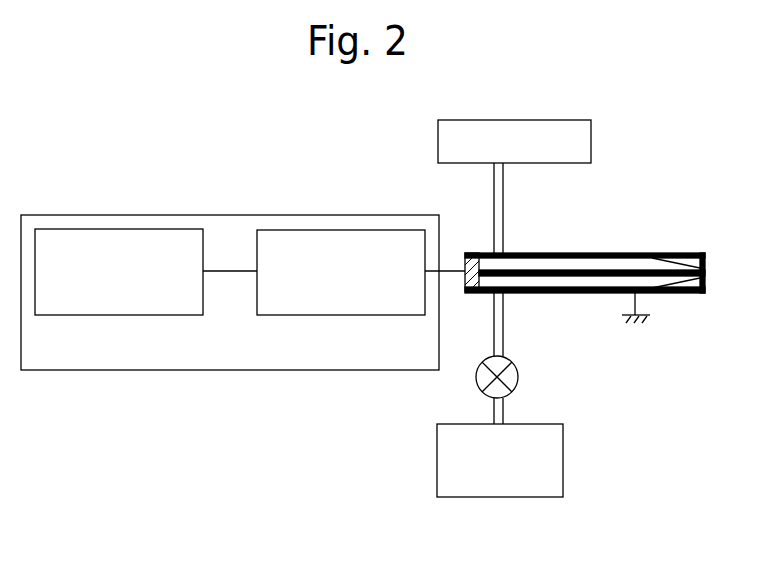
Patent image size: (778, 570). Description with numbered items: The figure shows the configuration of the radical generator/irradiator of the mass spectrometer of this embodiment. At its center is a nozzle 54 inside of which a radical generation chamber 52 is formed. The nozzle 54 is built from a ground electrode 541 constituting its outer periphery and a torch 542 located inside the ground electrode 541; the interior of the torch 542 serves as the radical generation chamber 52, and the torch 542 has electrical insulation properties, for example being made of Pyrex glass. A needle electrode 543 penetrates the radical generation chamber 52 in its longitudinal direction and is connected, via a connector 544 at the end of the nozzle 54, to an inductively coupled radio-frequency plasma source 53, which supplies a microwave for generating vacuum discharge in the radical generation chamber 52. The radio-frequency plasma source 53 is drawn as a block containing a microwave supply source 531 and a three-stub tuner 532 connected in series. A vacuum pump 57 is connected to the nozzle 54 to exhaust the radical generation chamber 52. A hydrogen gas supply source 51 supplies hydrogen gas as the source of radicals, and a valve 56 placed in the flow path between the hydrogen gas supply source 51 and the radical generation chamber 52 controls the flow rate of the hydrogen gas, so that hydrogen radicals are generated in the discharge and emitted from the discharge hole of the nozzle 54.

The hydrogen gas supply source 51 is at (510, 497).
The radical generation chamber 52 is at (658, 290).
The inductively coupled radio-frequency plasma source 53 is at (315, 370).
The microwave supply source 531 is at (135, 315).
The three-stub tuner 532 is at (357, 315).
The nozzle 54 is at (599, 259).
The ground electrode 541 is at (577, 293).
The torch 542 is at (620, 252).
The needle electrode 543 is at (518, 276).
The connector 544 is at (471, 251).
The valve 56 is at (518, 378).
The vacuum pump 57 is at (537, 119).